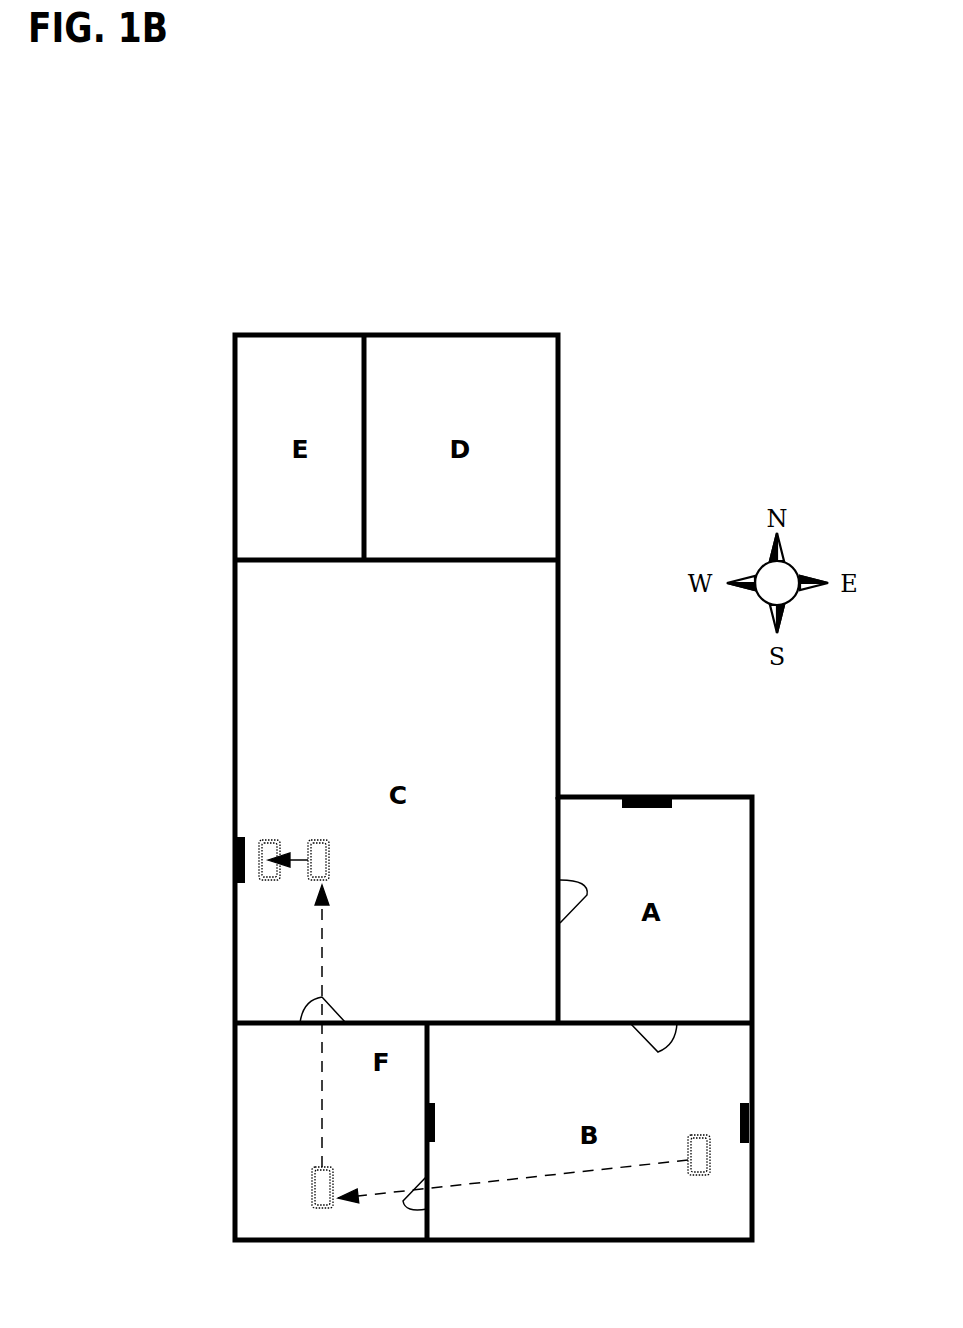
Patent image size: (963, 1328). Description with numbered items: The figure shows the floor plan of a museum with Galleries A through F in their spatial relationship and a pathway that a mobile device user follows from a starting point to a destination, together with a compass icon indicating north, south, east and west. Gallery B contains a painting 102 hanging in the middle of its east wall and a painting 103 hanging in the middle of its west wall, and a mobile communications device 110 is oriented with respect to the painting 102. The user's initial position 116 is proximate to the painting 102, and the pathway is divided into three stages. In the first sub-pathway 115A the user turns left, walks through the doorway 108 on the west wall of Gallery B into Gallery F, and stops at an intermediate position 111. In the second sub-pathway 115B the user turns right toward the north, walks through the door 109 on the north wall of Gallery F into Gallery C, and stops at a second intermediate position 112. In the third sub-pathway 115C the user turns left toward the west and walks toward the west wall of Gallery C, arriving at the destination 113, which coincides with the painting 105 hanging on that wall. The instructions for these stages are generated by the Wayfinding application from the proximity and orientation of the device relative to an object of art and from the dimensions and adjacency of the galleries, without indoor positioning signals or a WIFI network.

The painting 102 is at (740, 1127).
The painting 103 is at (435, 1123).
The painting 105 is at (245, 870).
The doorway 108 is at (428, 1198).
The door 109 is at (333, 1003).
The mobile communications device 110 is at (698, 1162).
The intermediate position 111 is at (313, 1187).
The intermediate position 112 is at (323, 870).
The destination 113 is at (268, 838).
The sub-pathway 115A is at (570, 1173).
The sub-pathway 115B is at (322, 1085).
The sub-pathway 115C is at (295, 858).
The initial position 116 is at (688, 1143).